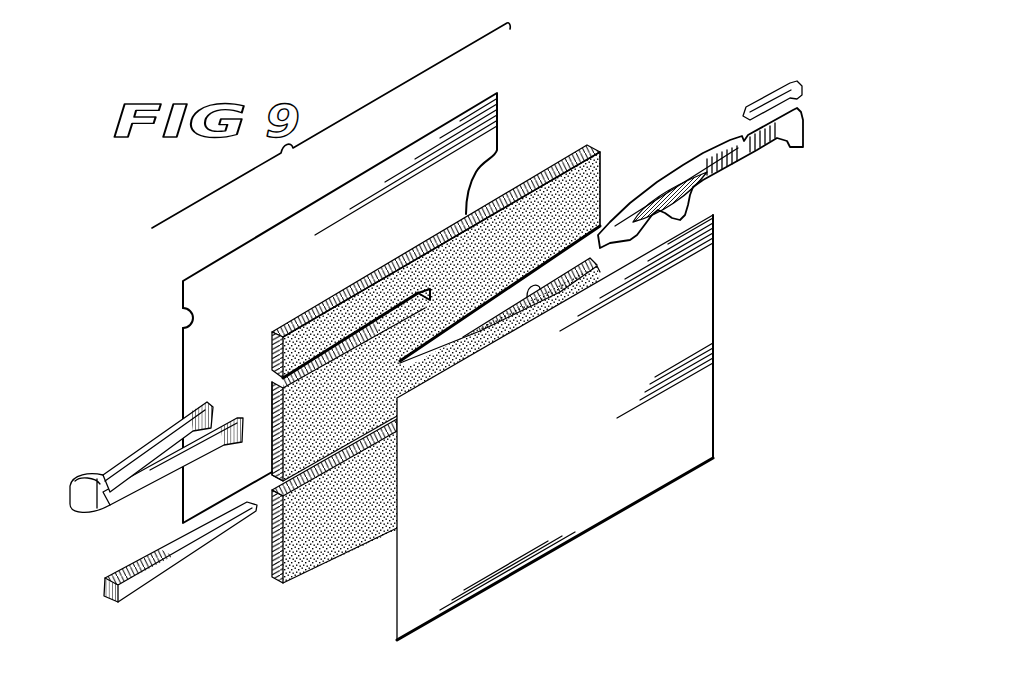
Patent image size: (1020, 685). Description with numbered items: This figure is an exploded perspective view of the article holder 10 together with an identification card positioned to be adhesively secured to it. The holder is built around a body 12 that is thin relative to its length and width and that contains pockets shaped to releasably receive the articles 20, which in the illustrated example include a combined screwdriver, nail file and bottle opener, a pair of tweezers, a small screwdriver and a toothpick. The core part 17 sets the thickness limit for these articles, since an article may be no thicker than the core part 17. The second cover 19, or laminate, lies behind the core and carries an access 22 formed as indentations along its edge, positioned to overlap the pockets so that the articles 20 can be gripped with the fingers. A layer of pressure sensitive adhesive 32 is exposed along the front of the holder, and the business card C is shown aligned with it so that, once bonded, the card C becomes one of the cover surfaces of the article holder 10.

The article holder 10 is at (656, 70).
The body 12 is at (567, 156).
The core part 17 is at (280, 437).
The second cover 19 is at (213, 281).
The articles 20 is at (806, 97).
The access 22 is at (483, 170).
The pressure sensitive adhesive 32 is at (547, 299).
The business card C is at (687, 430).